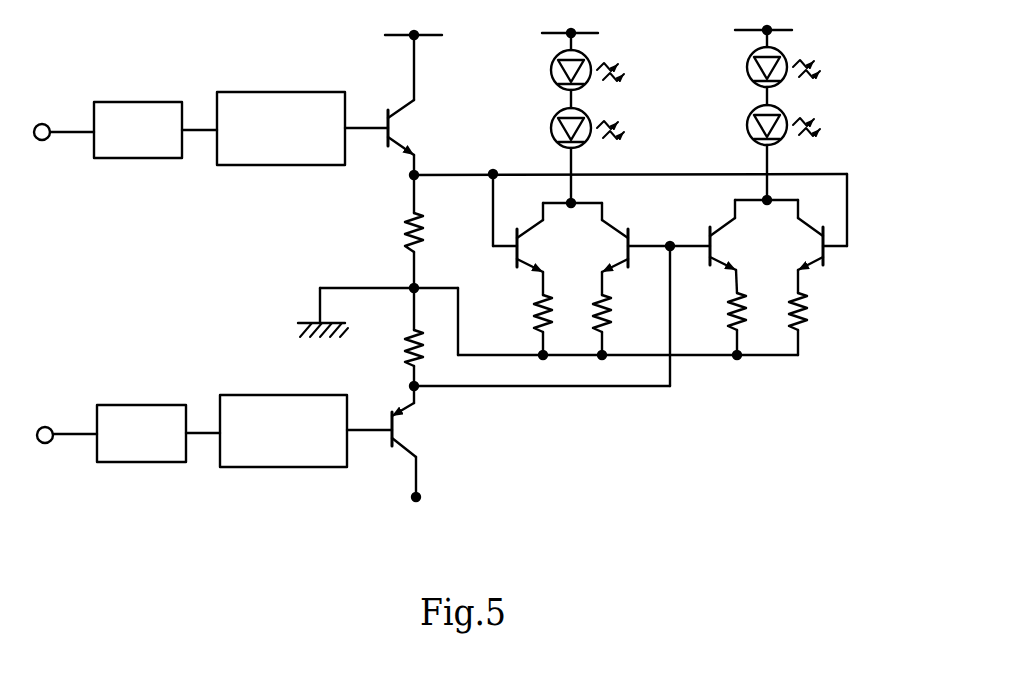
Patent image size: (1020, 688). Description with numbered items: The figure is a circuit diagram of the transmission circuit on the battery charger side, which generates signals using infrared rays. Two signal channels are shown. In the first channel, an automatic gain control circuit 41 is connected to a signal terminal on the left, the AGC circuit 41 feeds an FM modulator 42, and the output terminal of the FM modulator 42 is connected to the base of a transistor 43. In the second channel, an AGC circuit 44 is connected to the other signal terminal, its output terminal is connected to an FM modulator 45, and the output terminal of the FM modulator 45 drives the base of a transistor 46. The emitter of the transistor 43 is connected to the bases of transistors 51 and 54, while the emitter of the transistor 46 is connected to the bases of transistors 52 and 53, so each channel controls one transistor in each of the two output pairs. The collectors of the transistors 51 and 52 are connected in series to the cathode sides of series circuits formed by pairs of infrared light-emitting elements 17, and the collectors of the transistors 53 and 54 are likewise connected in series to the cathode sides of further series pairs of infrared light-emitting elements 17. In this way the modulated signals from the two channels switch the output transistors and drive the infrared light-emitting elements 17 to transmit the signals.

The infrared light-emitting element 17 is at (552, 73).
The automatic gain control circuit 41 is at (137, 101).
The FM modulator 42 is at (289, 92).
The transistor 43 is at (405, 122).
The AGC circuit 44 is at (147, 463).
The FM modulator 45 is at (295, 468).
The transistor 46 is at (408, 430).
The transistor 51 is at (523, 270).
The transistor 52 is at (622, 270).
The transistor 53 is at (720, 268).
The transistor 54 is at (821, 268).